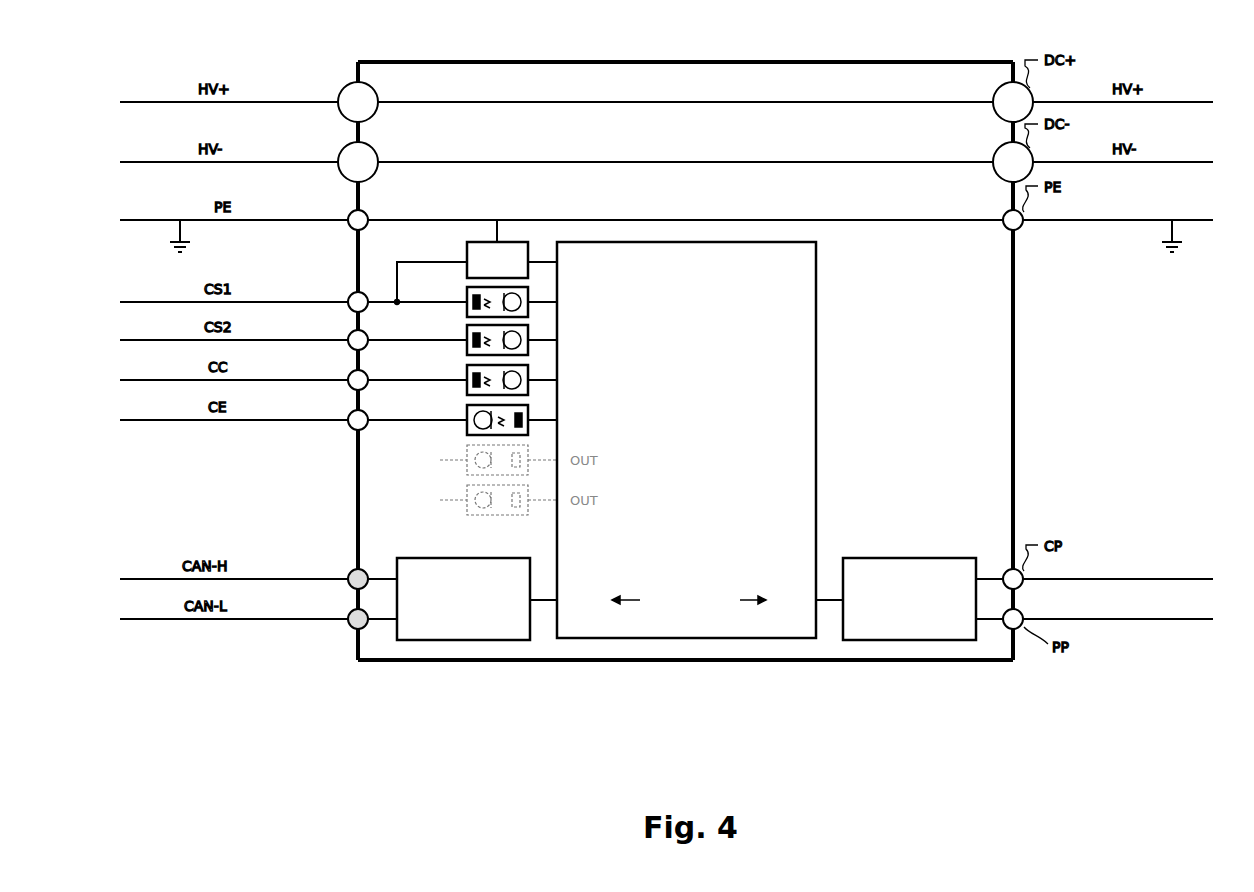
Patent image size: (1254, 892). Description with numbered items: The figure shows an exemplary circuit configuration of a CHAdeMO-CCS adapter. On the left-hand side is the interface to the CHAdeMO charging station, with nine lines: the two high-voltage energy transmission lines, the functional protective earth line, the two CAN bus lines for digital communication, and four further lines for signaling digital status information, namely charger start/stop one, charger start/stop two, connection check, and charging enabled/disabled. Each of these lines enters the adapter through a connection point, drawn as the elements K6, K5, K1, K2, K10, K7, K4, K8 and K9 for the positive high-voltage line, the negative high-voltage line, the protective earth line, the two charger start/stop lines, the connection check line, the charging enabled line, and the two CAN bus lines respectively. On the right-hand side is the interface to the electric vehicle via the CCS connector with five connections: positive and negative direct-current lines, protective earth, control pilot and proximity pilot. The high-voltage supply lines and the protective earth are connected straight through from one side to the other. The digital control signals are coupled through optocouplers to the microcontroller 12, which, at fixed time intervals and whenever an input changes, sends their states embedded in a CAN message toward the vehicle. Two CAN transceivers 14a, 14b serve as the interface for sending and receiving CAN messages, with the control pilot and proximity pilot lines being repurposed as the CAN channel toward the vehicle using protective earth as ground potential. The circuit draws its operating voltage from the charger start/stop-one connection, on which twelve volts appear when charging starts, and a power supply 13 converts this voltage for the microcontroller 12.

The microcontroller 12 is at (816, 418).
The power supply 13 is at (512, 240).
The CAN transceiver 14a is at (450, 640).
The CAN transceiver 14b is at (890, 640).
The PE switching element K1 is at (350, 212).
The CS1 switching element K2 is at (350, 294).
The CE switching element K4 is at (350, 412).
The HV- contactor K5 is at (346, 148).
The HV+ contactor K6 is at (346, 88).
The CC switching element K7 is at (350, 372).
The CAN-H switching element K8 is at (350, 571).
The CAN-L switching element K9 is at (350, 612).
The CS2 switching element K10 is at (350, 334).